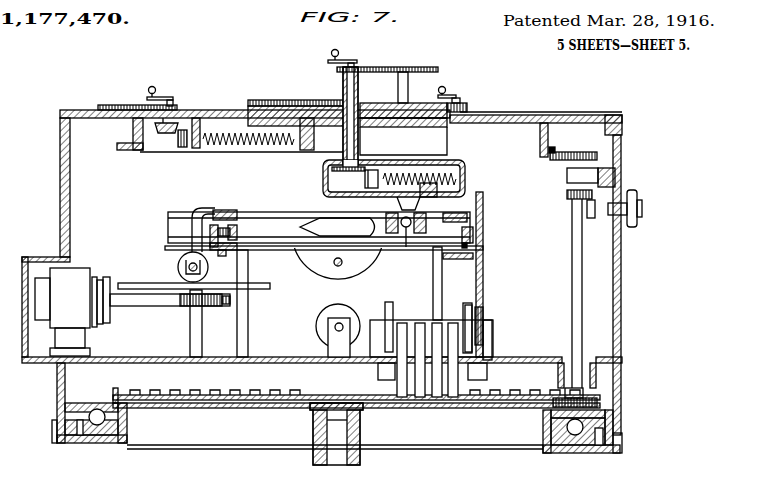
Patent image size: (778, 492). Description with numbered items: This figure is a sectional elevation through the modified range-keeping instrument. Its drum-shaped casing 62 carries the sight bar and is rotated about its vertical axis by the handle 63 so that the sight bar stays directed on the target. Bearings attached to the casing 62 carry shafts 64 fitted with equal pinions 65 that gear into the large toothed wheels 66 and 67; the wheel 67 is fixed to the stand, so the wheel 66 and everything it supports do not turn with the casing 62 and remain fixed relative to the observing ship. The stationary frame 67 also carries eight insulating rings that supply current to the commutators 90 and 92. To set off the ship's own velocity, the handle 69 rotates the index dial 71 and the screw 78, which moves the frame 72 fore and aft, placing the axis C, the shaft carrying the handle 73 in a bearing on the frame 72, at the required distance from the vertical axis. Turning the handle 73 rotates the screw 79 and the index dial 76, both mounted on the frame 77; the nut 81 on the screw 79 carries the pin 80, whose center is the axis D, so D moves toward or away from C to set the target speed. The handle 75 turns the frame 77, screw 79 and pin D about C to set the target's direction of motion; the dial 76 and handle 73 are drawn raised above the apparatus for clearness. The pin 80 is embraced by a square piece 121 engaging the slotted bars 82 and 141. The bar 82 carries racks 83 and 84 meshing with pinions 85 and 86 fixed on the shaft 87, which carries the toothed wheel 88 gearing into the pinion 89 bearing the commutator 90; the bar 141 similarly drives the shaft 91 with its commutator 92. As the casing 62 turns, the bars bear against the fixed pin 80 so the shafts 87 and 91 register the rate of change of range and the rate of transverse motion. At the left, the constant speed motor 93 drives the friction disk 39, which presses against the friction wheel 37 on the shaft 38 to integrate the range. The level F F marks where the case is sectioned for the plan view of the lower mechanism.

The friction wheel 37 is at (178, 262).
The shaft 38 is at (186, 268).
The friction disk 39 is at (262, 291).
The casing 62 is at (62, 183).
The handle 63 is at (640, 203).
The shafts 64 is at (583, 303).
The pinions 65 is at (598, 156).
The large toothed wheel 66 is at (553, 147).
The large toothed wheel 67 is at (115, 394).
The handle 69 is at (152, 86).
The index dial 71 is at (103, 104).
The frame 72 is at (243, 127).
The handle 73 is at (338, 46).
The handle 75 is at (448, 90).
The index dial 76 is at (405, 66).
The frame 77 is at (290, 102).
The screw 78 is at (222, 148).
The screw 79 is at (456, 182).
The pin 80 is at (406, 246).
The nut 81 is at (438, 190).
The slotted bar 82 is at (263, 212).
The rack 83 is at (211, 228).
The rack 84 is at (474, 233).
The pinion 85 is at (211, 245).
The pinion 86 is at (474, 250).
The shaft 87 is at (262, 249).
The toothed wheel 88 is at (484, 277).
The pinion 89 is at (485, 315).
The commutator 90 is at (406, 320).
The shaft 91 is at (333, 266).
The commutator 92 is at (314, 328).
The constant speed motor 93 is at (65, 322).
The square piece 121 is at (418, 216).
The slotted bar 141 is at (395, 235).
The axis C is at (355, 78).
The axis D is at (399, 210).
The section level F F is at (343, 235).